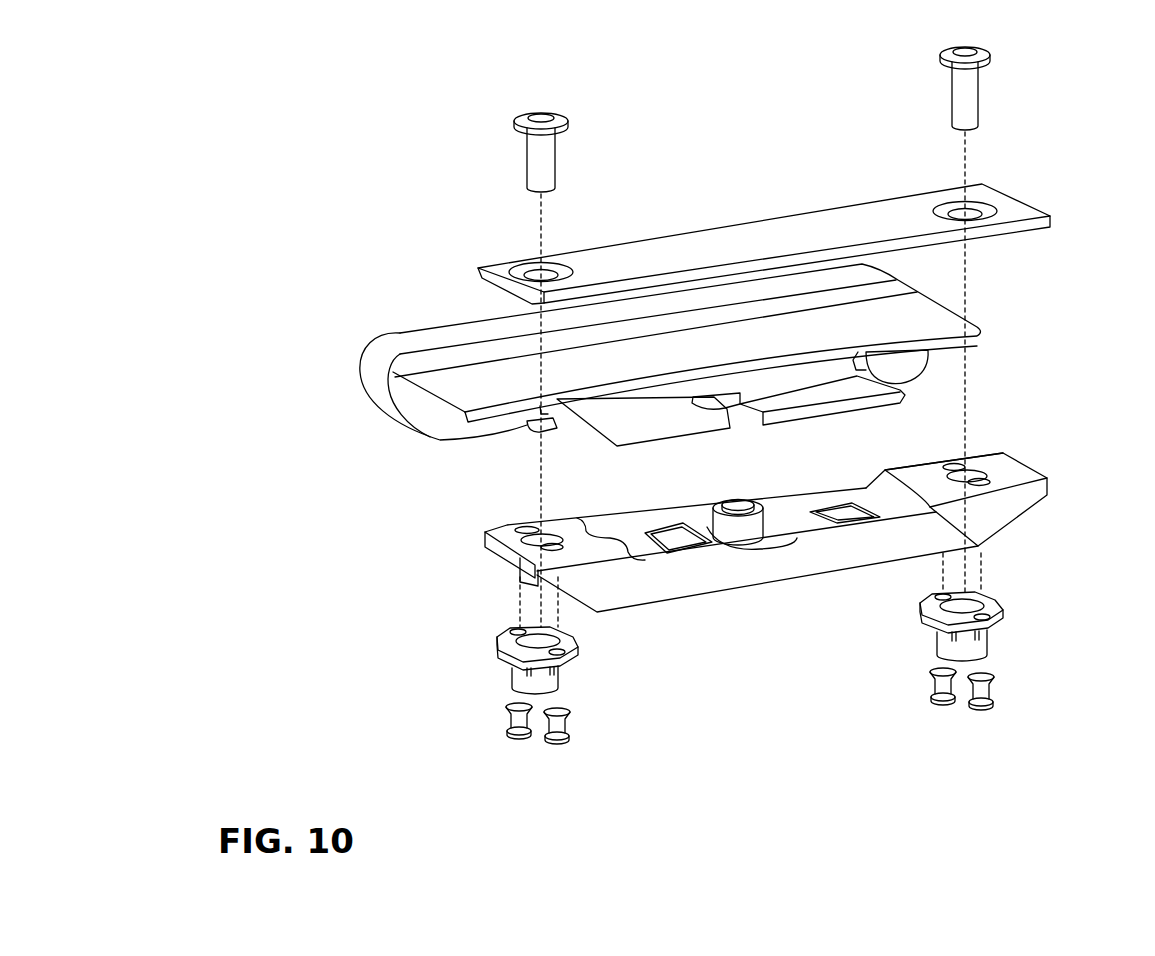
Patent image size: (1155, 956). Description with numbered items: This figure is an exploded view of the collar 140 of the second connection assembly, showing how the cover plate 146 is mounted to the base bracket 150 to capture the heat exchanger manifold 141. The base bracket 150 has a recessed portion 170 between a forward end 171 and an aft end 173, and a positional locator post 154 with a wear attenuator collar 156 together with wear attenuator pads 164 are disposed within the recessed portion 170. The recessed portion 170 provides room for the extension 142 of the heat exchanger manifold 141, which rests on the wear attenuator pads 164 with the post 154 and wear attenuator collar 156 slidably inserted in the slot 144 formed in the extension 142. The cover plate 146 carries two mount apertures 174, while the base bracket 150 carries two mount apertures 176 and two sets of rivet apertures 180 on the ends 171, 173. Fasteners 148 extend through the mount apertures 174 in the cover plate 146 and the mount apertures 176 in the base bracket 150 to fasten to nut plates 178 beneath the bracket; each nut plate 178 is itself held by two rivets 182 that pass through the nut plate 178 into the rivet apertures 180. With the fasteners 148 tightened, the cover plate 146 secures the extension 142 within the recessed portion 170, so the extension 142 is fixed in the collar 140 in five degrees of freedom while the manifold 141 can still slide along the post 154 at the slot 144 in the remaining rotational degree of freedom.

The collar 140 is at (322, 204).
The heat exchanger manifold 141 is at (627, 307).
The extension 142 is at (672, 412).
The slot 144 is at (742, 422).
The cover plate 146 is at (721, 210).
The fasteners 148 is at (527, 116).
The base bracket 150 is at (753, 531).
The post 154 is at (742, 503).
The wear attenuator collar 156 is at (771, 546).
The wear attenuator pads 164 is at (684, 540).
The recessed portion 170 is at (915, 507).
The forward end 171 is at (537, 582).
The aft end 173 is at (985, 523).
The mount apertures 174 is at (531, 272).
The mount apertures 176 is at (524, 542).
The nut plate 178 is at (510, 655).
The rivet apertures 180 is at (528, 527).
The rivets 182 is at (555, 745).